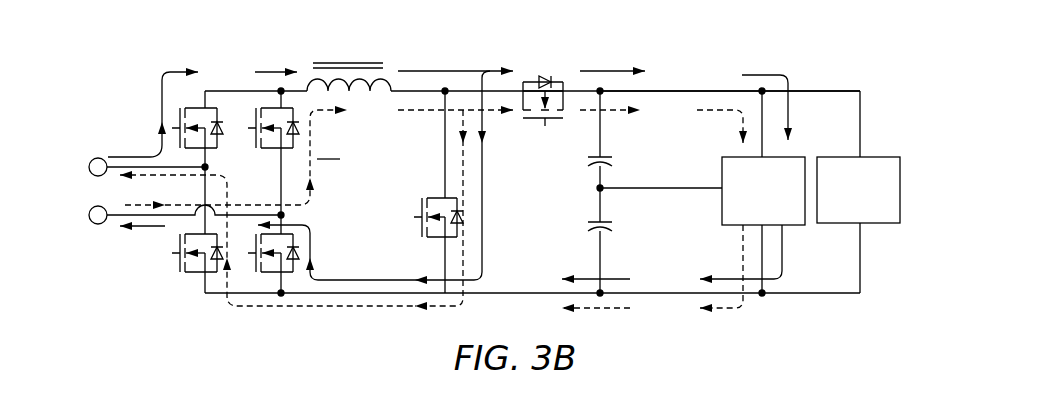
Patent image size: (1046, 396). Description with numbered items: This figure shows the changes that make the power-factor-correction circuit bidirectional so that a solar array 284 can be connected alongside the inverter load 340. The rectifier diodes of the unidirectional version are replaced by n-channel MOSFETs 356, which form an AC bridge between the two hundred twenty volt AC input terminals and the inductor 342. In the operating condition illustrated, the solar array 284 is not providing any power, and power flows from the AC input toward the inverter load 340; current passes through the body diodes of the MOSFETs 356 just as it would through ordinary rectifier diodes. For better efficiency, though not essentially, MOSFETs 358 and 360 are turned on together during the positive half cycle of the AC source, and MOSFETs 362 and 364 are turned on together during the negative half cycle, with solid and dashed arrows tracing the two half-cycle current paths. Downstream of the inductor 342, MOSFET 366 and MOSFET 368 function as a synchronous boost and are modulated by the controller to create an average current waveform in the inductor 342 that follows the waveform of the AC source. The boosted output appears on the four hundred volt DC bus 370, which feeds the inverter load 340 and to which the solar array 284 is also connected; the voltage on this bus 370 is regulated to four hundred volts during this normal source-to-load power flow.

The solar array 284 is at (840, 223).
The inverter load 340 is at (722, 172).
The inductor 342 is at (348, 63).
The n-channel MOSFETs 356 is at (317, 159).
The MOSFET 358 is at (197, 108).
The MOSFET 360 is at (273, 108).
The MOSFET 362 is at (197, 274).
The MOSFET 364 is at (287, 272).
The MOSFET 366 is at (457, 207).
The MOSFET 368 is at (545, 82).
The 400 VDC bus 370 is at (725, 91).